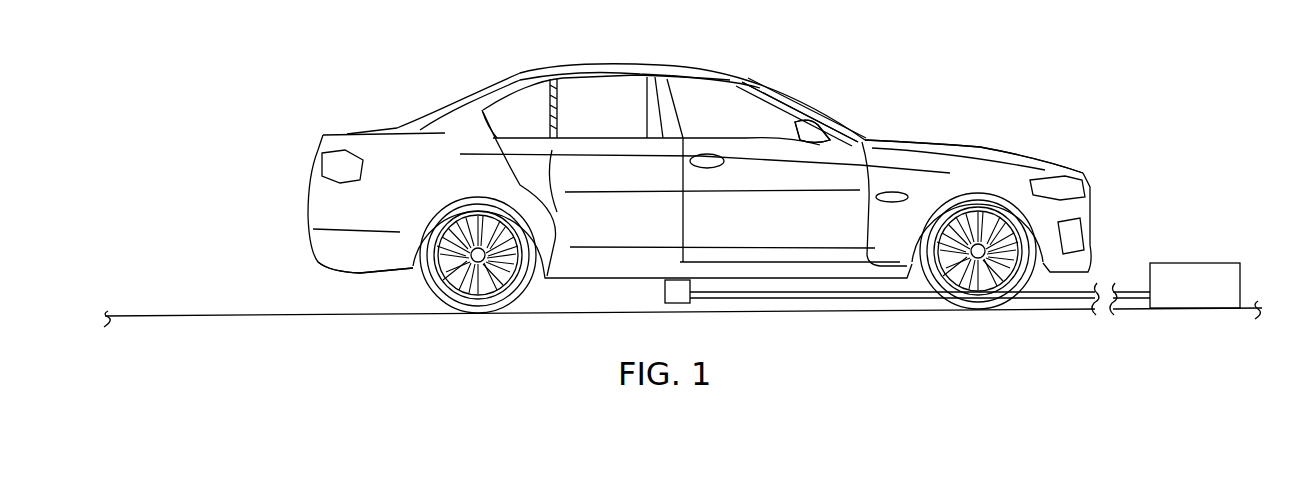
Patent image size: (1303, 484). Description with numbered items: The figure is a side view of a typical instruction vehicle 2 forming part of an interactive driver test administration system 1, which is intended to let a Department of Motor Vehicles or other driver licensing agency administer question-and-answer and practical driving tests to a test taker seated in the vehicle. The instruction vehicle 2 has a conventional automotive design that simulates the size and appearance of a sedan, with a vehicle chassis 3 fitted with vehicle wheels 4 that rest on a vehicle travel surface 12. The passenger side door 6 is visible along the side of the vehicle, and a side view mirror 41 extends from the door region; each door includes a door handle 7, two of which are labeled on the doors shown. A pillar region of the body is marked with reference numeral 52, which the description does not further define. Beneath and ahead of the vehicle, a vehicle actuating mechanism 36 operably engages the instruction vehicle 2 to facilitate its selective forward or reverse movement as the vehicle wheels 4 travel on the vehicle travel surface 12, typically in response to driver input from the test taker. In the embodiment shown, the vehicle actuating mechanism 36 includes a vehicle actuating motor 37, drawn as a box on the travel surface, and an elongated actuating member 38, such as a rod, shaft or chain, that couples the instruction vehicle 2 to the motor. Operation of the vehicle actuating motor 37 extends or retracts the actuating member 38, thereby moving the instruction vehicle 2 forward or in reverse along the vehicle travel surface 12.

The interactive driver test administration system 1 is at (334, 55).
The instruction vehicle 2 is at (983, 141).
The vehicle chassis 3 is at (363, 247).
The vehicle wheels 4 is at (433, 297).
The passenger side door 6 is at (827, 180).
The door handle 7 is at (558, 214).
The vehicle travel surface 12 is at (200, 317).
The vehicle actuating mechanism 36 is at (966, 267).
The vehicle actuating motor 37 is at (1175, 215).
The actuating member 38 is at (870, 300).
The side view mirror 41 is at (793, 120).
The A-pillar 52 is at (790, 96).